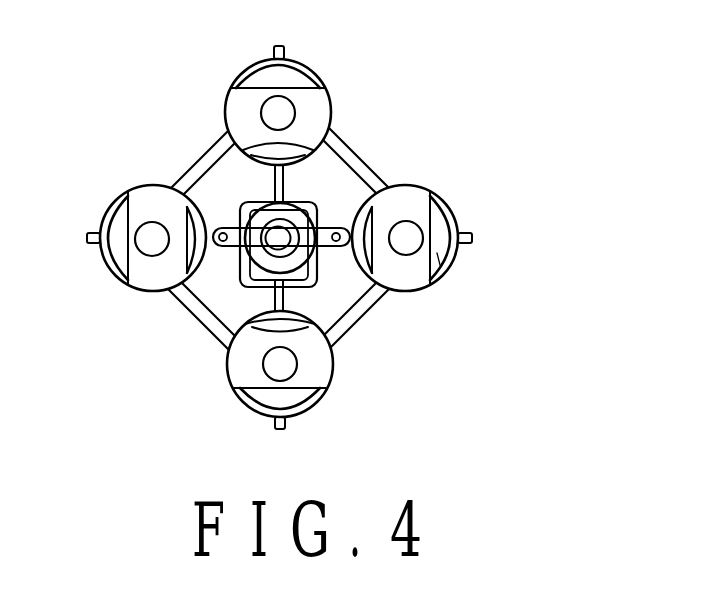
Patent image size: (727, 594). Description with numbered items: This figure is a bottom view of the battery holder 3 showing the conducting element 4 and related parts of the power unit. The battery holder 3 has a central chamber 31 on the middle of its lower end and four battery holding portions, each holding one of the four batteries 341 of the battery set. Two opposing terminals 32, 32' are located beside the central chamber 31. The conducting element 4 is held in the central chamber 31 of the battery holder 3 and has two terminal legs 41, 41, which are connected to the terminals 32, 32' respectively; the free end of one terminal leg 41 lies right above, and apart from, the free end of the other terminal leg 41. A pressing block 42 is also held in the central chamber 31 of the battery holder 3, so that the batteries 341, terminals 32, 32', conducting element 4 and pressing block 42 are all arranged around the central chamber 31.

The battery holder 3 is at (440, 184).
The central chamber 31 is at (288, 243).
The terminal 32 is at (148, 335).
The terminal 32' is at (404, 340).
The battery 341 is at (441, 275).
The conducting element 4 is at (326, 190).
The terminal leg 41 is at (238, 228).
The pressing block 42 is at (285, 232).